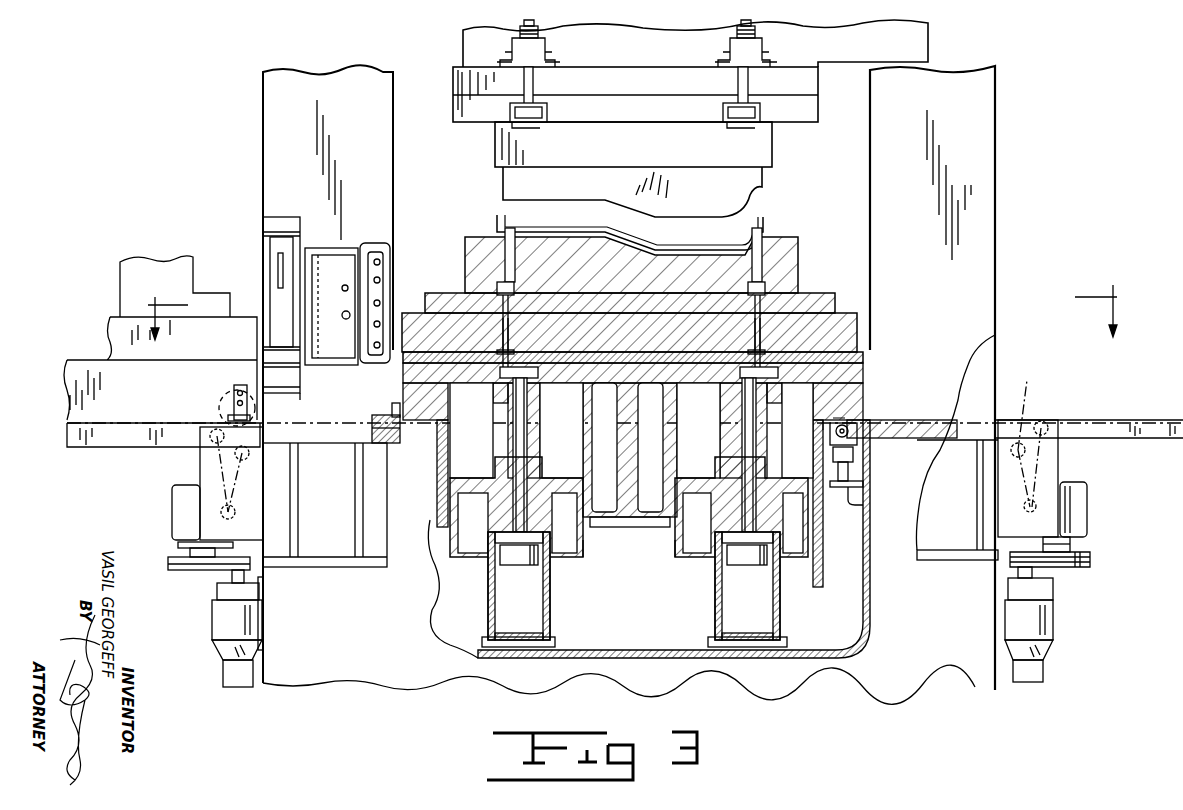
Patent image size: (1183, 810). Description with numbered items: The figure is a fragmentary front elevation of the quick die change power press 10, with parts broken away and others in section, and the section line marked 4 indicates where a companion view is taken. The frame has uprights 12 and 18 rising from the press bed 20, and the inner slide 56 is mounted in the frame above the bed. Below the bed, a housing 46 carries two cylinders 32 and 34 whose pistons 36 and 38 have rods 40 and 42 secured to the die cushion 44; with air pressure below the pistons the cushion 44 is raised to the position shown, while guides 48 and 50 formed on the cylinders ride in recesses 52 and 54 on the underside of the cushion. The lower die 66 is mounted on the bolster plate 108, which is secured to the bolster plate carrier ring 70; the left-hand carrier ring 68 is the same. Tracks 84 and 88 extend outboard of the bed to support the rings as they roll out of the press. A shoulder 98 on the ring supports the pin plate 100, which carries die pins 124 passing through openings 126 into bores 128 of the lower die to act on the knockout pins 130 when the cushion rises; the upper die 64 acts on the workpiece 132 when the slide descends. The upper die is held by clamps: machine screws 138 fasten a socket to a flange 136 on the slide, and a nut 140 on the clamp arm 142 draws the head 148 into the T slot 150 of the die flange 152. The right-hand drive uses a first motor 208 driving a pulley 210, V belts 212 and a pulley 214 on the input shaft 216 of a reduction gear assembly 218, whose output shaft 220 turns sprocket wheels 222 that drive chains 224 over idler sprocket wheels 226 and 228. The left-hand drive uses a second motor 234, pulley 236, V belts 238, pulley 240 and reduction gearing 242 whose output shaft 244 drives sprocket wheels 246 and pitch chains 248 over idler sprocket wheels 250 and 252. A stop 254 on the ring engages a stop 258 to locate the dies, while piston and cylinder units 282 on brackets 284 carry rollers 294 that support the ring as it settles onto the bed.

The quick die change power press 10 is at (1000, 178).
The upright 12 is at (393, 200).
The upright 18 is at (995, 215).
The press bed 20 is at (937, 421).
The cylinder 32 is at (548, 612).
The cylinder 34 is at (714, 605).
The piston 36 is at (548, 560).
The piston 38 is at (712, 560).
The rod 40 is at (527, 446).
The rod 42 is at (753, 446).
The die cushion 44 is at (562, 390).
The housing 46 is at (863, 650).
The guide 48 is at (583, 550).
The guide 50 is at (675, 550).
The recess 52 is at (458, 460).
The recess 54 is at (680, 440).
The inner slide 56 is at (815, 62).
The upper die 64 is at (765, 190).
The lower die 66 is at (798, 258).
The bolster plate carrier ring 68 is at (108, 440).
The bolster plate carrier ring 70 is at (863, 375).
The track 84 is at (1175, 438).
The track 88 is at (138, 447).
The shoulder 98 is at (863, 396).
The pin plate 100 is at (660, 352).
The bolster plate 108 is at (858, 320).
The die pin 124 is at (510, 330).
The opening 126 is at (510, 348).
The bore 128 is at (798, 282).
The knockout pin 130 is at (503, 228).
The workpiece 132 is at (768, 225).
The flange 136 is at (818, 90).
The machine screw 138 is at (508, 58).
The nut 140 is at (540, 30).
The clamp arm 142 is at (533, 85).
The head 148 is at (760, 108).
The T slot 150 is at (514, 128).
The flange 152 is at (800, 125).
The first motor 208 is at (1055, 670).
The pulley 210 is at (1034, 572).
The V belt 212 is at (1052, 568).
The pulley 214 is at (1077, 552).
The input shaft 216 is at (1043, 545).
The reduction gear assembly 218 is at (1087, 515).
The output shaft 220 is at (1026, 503).
The sprocket wheel 222 is at (1025, 510).
The chain 224 is at (1060, 462).
The idler sprocket wheel 226 is at (1040, 420).
The idler sprocket wheel 228 is at (1050, 420).
The second motor 234 is at (215, 650).
The pulley 236 is at (265, 576).
The V belt 238 is at (225, 583).
The pulley 240 is at (180, 570).
The reduction gearing 242 is at (172, 520).
The output shaft 244 is at (220, 492).
The sprocket wheel 246 is at (242, 513).
The pitch chain 248 is at (315, 422).
The idler sprocket wheel 250 is at (210, 440).
The idler sprocket wheel 252 is at (250, 458).
The stop 254 is at (378, 408).
The stop 258 is at (395, 443).
The piston and cylinder unit 282 is at (862, 468).
The bracket 284 is at (862, 498).
The roller 294 is at (857, 418).
The section line 4 is at (630, 306).